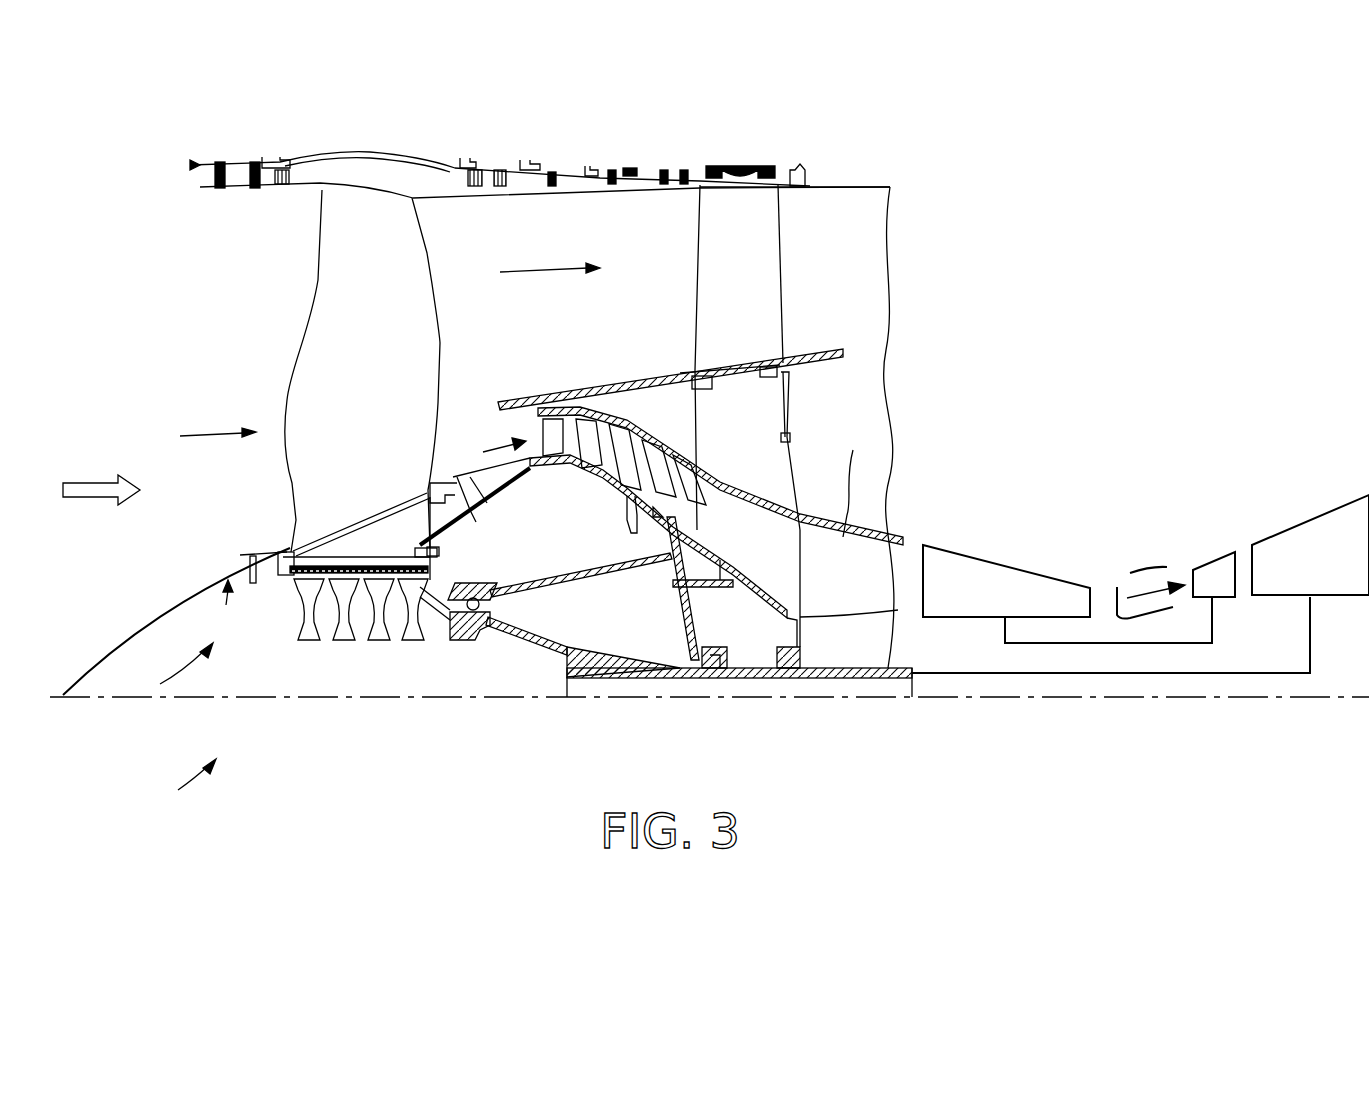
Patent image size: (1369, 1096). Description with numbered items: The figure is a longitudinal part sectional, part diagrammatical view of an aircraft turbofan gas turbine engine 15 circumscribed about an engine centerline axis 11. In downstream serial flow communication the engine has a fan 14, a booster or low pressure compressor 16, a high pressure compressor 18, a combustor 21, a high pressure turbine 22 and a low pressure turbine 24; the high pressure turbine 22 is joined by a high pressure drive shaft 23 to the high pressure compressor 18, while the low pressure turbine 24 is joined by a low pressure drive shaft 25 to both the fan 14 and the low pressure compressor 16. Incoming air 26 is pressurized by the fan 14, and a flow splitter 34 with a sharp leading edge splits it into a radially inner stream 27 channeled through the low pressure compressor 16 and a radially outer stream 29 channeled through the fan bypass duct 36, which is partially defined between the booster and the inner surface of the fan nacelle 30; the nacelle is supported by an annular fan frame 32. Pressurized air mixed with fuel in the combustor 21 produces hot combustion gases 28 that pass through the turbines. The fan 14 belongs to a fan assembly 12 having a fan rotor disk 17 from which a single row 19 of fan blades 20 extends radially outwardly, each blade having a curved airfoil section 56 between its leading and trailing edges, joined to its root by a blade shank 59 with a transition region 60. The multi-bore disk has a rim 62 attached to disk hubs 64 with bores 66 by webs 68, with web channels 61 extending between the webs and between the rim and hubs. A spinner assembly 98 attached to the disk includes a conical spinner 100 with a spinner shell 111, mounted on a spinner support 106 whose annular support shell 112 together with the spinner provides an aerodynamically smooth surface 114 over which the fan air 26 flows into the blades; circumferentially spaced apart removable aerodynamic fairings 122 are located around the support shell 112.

The engine centerline axis 11 is at (185, 704).
The fan assembly 12 is at (170, 670).
The fan 14 is at (198, 437).
The aircraft turbofan gas turbine engine 15 is at (179, 784).
The low pressure compressor 16 is at (686, 493).
The fan rotor disk 17 is at (352, 578).
The high pressure compressor 18 is at (1024, 600).
The row of fan blades 19 is at (297, 484).
The fan blade 20 is at (346, 371).
The combustor 21 is at (1133, 578).
The high pressure turbine 22 is at (1205, 568).
The high pressure drive shaft 23 is at (1135, 643).
The low pressure turbine 24 is at (1329, 565).
The low pressure drive shaft 25 is at (1035, 676).
The air 26 is at (95, 480).
The radially inner stream 27 is at (488, 449).
The hot combustion gases 28 is at (1140, 597).
The radially outer stream 29 is at (540, 282).
The fan nacelle 30 is at (375, 168).
The fan frame 32 is at (788, 420).
The flow splitter 34 is at (510, 400).
The fan bypass duct 36 is at (660, 262).
The airfoil section 56 is at (292, 298).
The blade shank 59 is at (440, 520).
The transition region 60 is at (300, 548).
The web channel 61 is at (401, 612).
The rim 62 is at (417, 570).
The disk hub 64 is at (328, 640).
The bore 66 is at (328, 640).
The web 68 is at (337, 597).
The spinner assembly 98 is at (226, 605).
The spinner 100 is at (178, 600).
The spinner support 106 is at (283, 566).
The spinner shell 111 is at (106, 662).
The support shell 112 is at (285, 552).
The aerodynamically smooth surface 114 is at (145, 631).
The removable aerodynamic fairings 122 is at (285, 548).